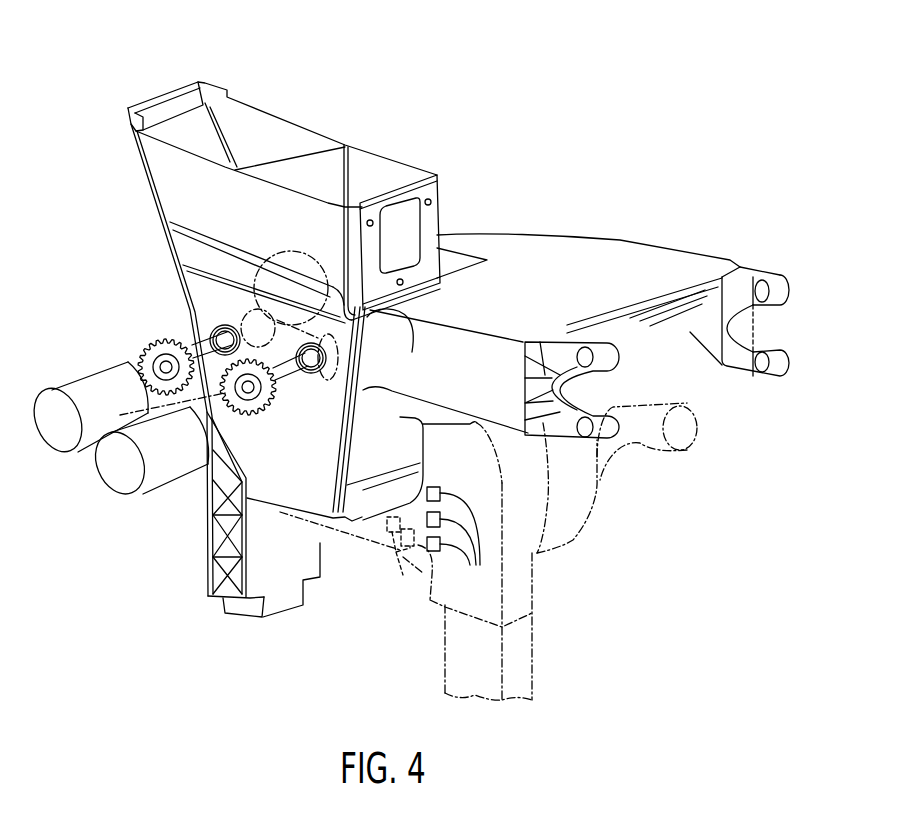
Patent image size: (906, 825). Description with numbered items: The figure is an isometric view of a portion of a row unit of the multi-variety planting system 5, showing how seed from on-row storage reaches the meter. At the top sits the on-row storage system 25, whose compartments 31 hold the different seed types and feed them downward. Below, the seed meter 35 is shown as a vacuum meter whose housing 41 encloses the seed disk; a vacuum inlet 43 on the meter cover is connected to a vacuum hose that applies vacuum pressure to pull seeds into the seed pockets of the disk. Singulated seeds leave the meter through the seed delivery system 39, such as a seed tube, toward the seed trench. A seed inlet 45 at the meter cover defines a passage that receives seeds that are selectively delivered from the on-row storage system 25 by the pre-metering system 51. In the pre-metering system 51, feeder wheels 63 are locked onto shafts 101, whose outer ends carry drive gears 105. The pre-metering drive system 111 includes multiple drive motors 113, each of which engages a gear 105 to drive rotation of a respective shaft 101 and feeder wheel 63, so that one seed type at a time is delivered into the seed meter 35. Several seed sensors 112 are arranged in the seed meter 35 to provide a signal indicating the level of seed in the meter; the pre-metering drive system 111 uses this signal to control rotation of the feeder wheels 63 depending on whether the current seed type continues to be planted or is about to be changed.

The planting system 5 is at (627, 150).
The on-row storage system 25 is at (340, 48).
The compartments 31 is at (285, 140).
The seed meter 35 is at (607, 557).
The seed delivery system 39 is at (540, 657).
The housing 41 is at (540, 567).
The vacuum inlet 43 is at (640, 447).
The seed inlet 45 is at (432, 588).
The pre-metering system 51 is at (135, 235).
The feeder wheels 63 is at (291, 266).
The shafts 101 is at (187, 312).
The drive gears 105 is at (148, 337).
The pre-metering drive system 111 is at (100, 275).
The seed sensors 112 is at (402, 576).
The drive motors 113 is at (55, 455).